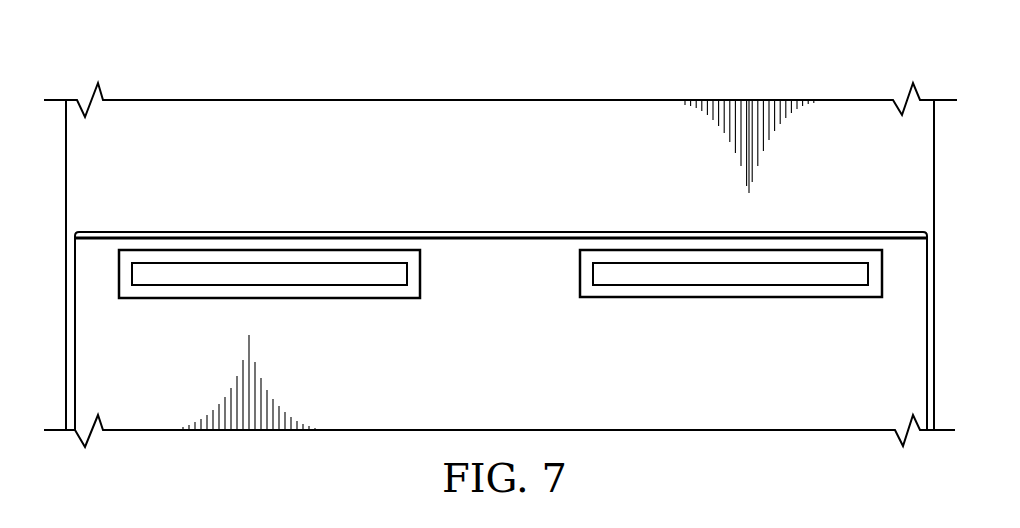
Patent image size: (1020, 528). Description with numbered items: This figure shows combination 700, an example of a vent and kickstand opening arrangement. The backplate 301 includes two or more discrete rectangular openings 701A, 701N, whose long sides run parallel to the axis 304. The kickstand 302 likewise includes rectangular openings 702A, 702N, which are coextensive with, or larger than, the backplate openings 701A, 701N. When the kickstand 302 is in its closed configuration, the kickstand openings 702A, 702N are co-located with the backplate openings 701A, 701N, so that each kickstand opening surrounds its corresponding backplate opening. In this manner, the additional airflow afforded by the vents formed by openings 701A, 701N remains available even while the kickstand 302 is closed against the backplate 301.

The combination 700 is at (306, 87).
The backplate 301 is at (522, 172).
The kickstand 302 is at (522, 390).
The axis 304 is at (791, 229).
The rectangular opening 701A is at (320, 286).
The rectangular opening 702A is at (186, 298).
The rectangular opening 701N is at (678, 286).
The rectangular opening 702N is at (813, 298).